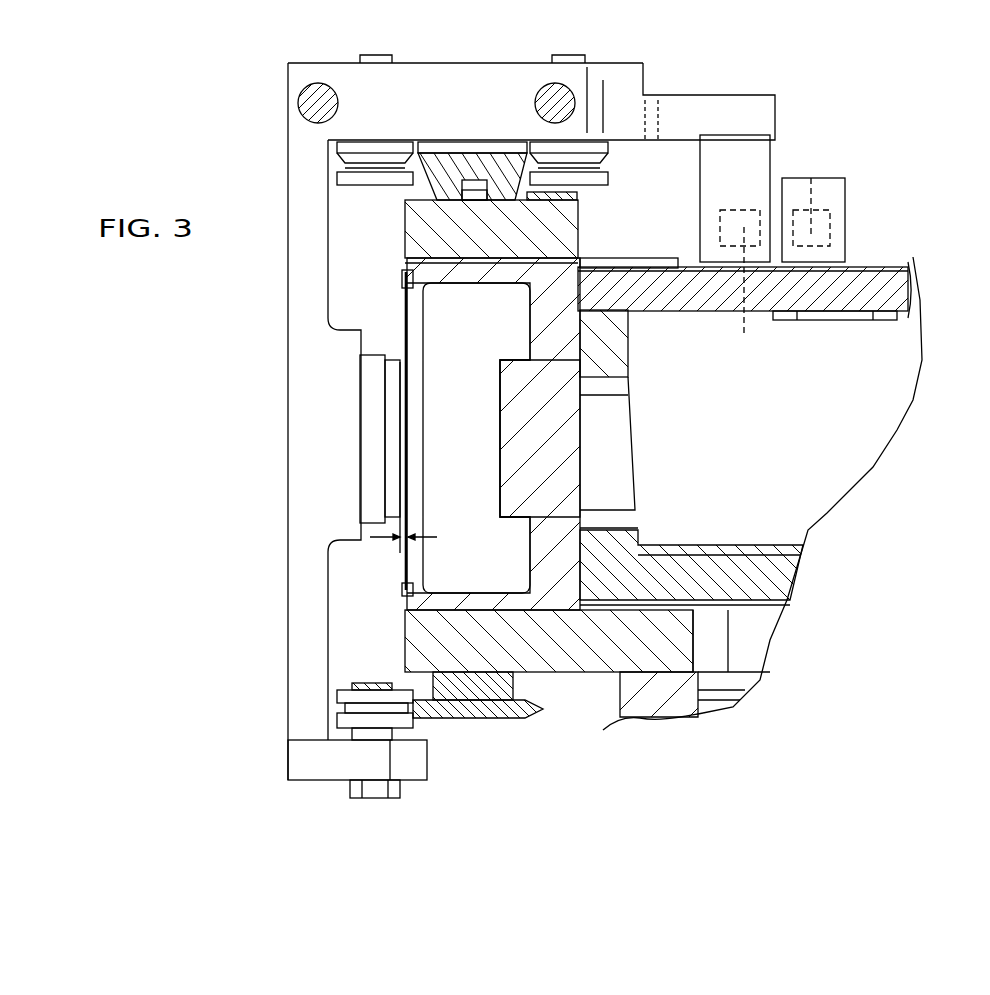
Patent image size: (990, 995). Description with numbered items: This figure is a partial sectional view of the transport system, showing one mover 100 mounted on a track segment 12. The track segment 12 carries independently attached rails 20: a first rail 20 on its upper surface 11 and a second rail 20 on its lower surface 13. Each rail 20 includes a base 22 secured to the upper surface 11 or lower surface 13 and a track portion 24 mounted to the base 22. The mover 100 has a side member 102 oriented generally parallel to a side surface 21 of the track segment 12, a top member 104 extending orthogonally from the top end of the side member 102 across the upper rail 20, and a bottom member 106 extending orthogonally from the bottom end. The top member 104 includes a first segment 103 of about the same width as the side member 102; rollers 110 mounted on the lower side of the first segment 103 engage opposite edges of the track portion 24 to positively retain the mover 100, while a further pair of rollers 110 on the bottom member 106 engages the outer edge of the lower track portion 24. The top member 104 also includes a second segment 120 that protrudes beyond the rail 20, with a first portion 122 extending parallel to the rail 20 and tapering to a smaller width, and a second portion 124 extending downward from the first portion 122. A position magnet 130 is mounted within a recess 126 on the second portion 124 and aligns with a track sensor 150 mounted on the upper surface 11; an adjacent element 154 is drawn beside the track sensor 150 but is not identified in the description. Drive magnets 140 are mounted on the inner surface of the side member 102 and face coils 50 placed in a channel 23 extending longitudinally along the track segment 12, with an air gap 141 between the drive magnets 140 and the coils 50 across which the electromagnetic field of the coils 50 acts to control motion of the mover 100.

The mover 100 is at (289, 100).
The side member 102 is at (303, 291).
The first segment 103 is at (508, 112).
The top member 104 is at (415, 80).
The bottom member 106 is at (410, 765).
The rollers 110 is at (378, 150).
The second segment 120 is at (746, 95).
The first portion 122 is at (680, 118).
The second portion 124 is at (745, 155).
The recess 126 is at (722, 228).
The position magnet 130 is at (747, 297).
The drive magnets 140 is at (393, 432).
The air gap 141 is at (436, 538).
The track sensor 150 is at (846, 230).
The bolt 154 is at (812, 178).
The upper surface 11 is at (614, 266).
The track segment 12 is at (552, 445).
The lower surface 13 is at (755, 612).
The rail 20 is at (550, 250).
The side surface 21 is at (400, 283).
The base 22 is at (489, 246).
The channel 23 is at (526, 322).
The track portion 24 is at (463, 167).
The coils 50 is at (413, 407).